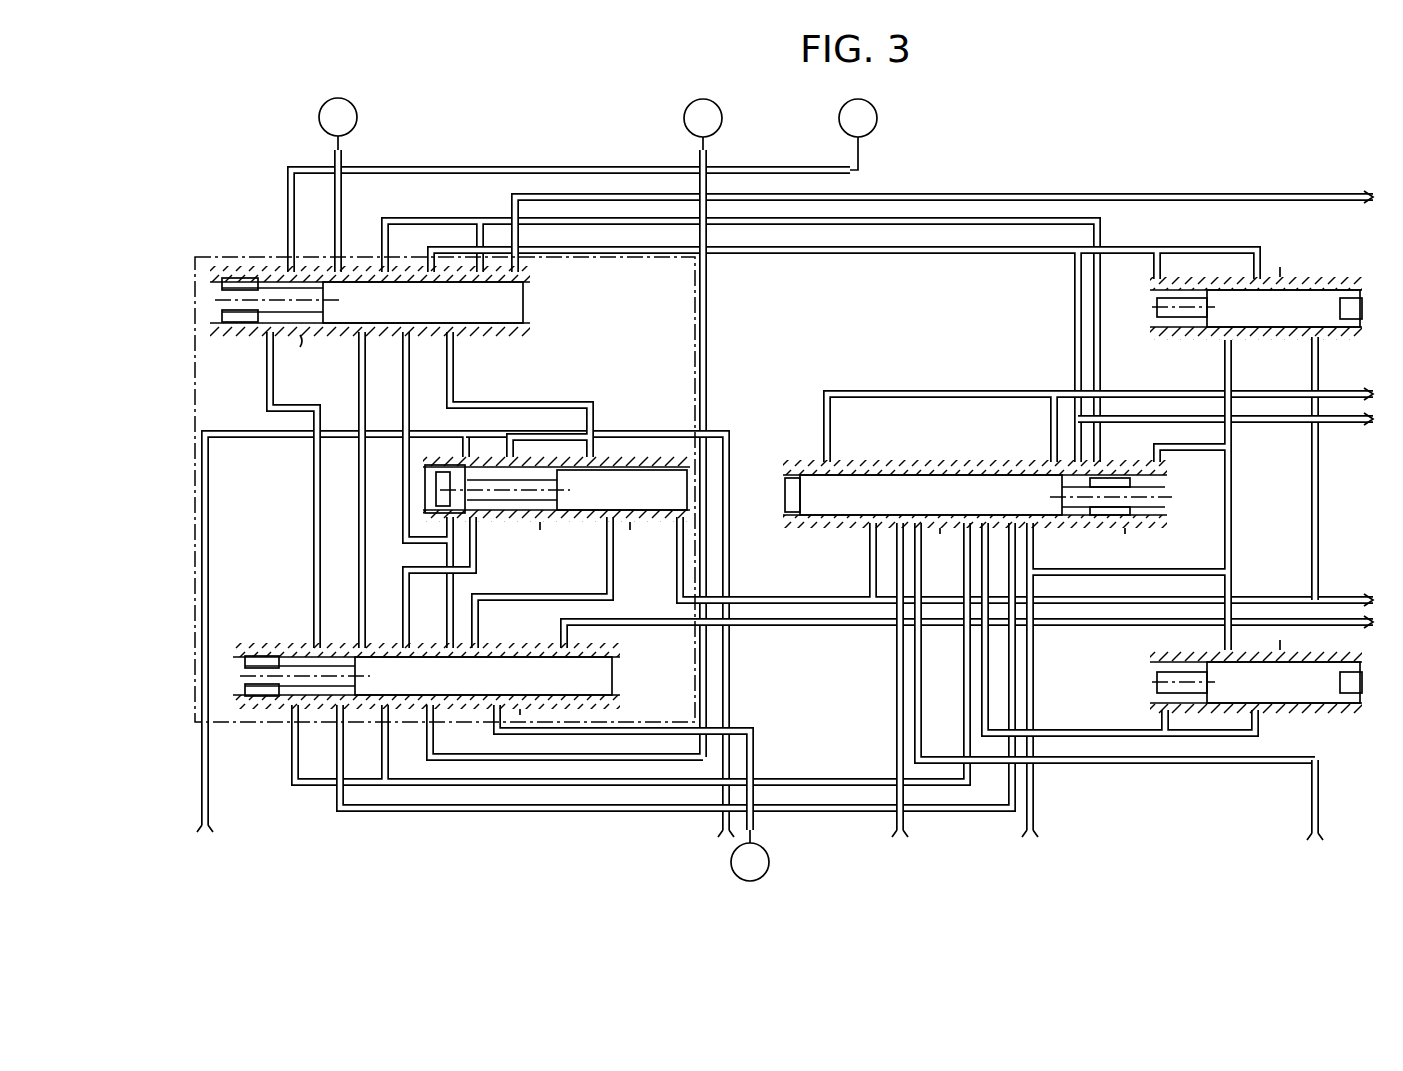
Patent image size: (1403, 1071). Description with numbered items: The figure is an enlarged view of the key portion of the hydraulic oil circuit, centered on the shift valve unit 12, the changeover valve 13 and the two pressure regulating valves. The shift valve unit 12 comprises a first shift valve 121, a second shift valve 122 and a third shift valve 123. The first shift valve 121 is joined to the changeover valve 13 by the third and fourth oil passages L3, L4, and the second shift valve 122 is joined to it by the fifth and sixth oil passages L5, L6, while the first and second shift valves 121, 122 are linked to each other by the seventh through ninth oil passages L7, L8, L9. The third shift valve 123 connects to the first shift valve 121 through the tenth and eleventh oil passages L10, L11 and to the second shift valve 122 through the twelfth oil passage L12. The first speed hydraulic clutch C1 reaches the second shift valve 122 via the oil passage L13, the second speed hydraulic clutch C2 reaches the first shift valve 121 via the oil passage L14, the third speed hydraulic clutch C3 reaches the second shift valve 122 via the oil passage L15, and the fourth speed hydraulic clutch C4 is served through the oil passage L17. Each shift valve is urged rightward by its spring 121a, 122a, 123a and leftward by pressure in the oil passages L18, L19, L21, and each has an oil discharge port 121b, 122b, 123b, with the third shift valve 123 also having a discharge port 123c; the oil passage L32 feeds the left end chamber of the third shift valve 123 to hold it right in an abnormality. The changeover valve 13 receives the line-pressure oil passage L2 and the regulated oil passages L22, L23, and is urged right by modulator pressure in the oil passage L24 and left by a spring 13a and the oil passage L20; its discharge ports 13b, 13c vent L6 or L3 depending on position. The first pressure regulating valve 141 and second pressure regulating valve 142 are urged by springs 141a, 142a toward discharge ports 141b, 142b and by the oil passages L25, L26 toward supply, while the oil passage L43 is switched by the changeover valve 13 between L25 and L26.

The shift valve unit 12 is at (710, 340).
The second shift valve 122 is at (403, 288).
The spring 122a is at (242, 279).
The oil discharge port 122b is at (308, 344).
The third shift valve 123 is at (556, 495).
The spring 123a is at (477, 518).
The oil discharge port 123b is at (542, 526).
The oil discharge port 123c is at (626, 530).
The first shift valve 121 is at (458, 720).
The spring 121a is at (262, 654).
The oil discharge port 121b is at (528, 724).
The changeover valve 13 is at (1007, 493).
The spring 13a is at (1166, 480).
The oil discharge port 13b is at (1126, 536).
The oil discharge port 13c is at (931, 538).
The second pressure regulating valve 142 is at (1232, 262).
The spring 142a is at (1164, 336).
The oil discharge port 142b is at (1312, 262).
The first pressure regulating valve 141 is at (1229, 663).
The spring 141a is at (1154, 668).
The oil discharge port 141b is at (1273, 606).
The first speed hydraulic clutch C1 is at (338, 124).
The second speed hydraulic clutch C2 is at (703, 124).
The third speed hydraulic clutch C3 is at (858, 134).
The fourth speed hydraulic clutch C4 is at (750, 855).
The No. 2 oil passage L2 is at (1234, 544).
The No. 3 oil passage L3 is at (844, 779).
The No. 4 oil passage L4 is at (842, 806).
The No. 5 oil passage L5 is at (819, 252).
The No. 6 oil passage L6 is at (893, 228).
The No. 7 oil passage L7 is at (313, 504).
The No. 8 oil passage L8 is at (360, 536).
The No. 9 oil passage L9 is at (402, 542).
The No. 10 oil passage L10 is at (404, 612).
The No. 11 oil passage L11 is at (508, 604).
The No. 12 oil passage L12 is at (455, 368).
The No. 13 oil passage L13 is at (342, 200).
The No. 14 oil passage L14 is at (709, 294).
The No. 15 oil passage L15 is at (407, 184).
The No. 17 oil passage L17 is at (748, 728).
The No. 18 oil passage L18 is at (755, 644).
The No. 19 oil passage L19 is at (1234, 202).
The No. 20 oil passage L20 is at (1252, 448).
The No. 21 oil passage L21 is at (729, 428).
The No. 22 oil passage L22 is at (1081, 754).
The No. 23 oil passage L23 is at (1156, 254).
The No. 24 oil passage L24 is at (891, 392).
The No. 25 oil passage L25 is at (1308, 800).
The No. 26 oil passage L26 is at (1329, 574).
The No. 32 oil passage L32 is at (212, 552).
The No. 43 oil passage L43 is at (892, 650).